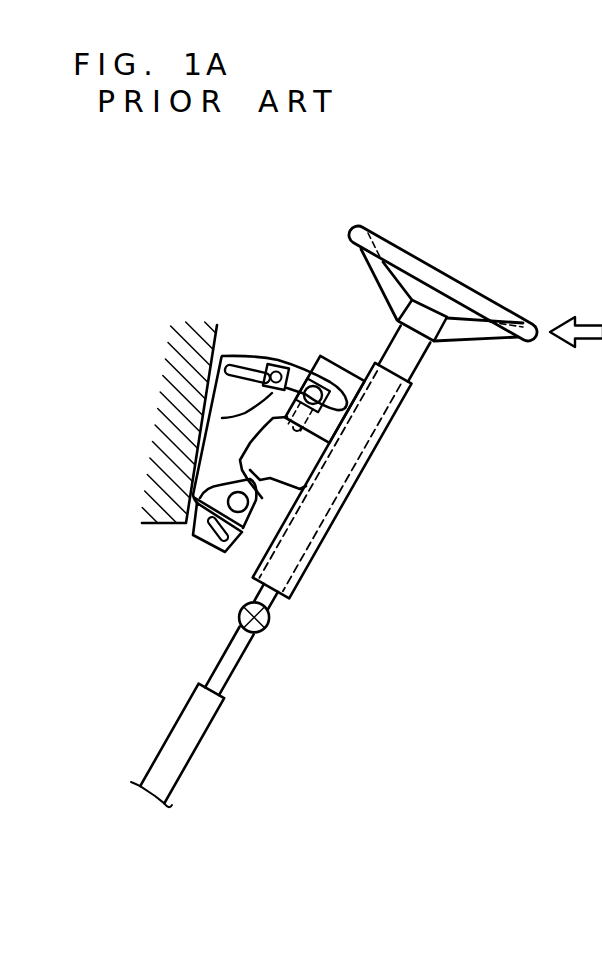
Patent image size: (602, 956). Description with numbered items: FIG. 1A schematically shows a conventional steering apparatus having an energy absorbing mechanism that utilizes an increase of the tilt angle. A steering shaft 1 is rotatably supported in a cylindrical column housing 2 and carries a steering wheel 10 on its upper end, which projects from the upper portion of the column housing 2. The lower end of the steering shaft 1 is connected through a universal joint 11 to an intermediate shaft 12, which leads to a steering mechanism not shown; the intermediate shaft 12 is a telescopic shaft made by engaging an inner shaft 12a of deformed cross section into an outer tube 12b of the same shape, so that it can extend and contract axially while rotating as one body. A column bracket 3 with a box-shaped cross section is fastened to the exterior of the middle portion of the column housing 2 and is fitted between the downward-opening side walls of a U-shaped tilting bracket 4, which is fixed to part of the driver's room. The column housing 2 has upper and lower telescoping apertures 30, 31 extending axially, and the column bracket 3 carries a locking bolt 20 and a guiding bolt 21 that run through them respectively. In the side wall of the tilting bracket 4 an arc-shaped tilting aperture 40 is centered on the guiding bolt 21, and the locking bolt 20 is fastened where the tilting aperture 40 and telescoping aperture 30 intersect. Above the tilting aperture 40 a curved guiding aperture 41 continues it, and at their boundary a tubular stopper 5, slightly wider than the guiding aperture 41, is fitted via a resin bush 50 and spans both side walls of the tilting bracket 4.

The steering shaft 1 is at (416, 357).
The column housing 2 is at (393, 416).
The column bracket 3 is at (326, 467).
The tilting bracket 4 is at (262, 355).
The stopper 5 is at (263, 390).
The steering wheel 10 is at (452, 273).
The universal joint 11 is at (268, 620).
The intermediate shaft 12 is at (265, 717).
The inner shaft 12a is at (233, 670).
The outer tube 12b is at (202, 737).
The locking bolt 20 is at (369, 437).
The guiding bolt 21 is at (190, 536).
The telescoping aperture 30 is at (337, 357).
The telescoping aperture 31 is at (212, 548).
The tilting aperture 40 is at (281, 362).
The guiding aperture 41 is at (243, 366).
The bush 50 is at (217, 418).